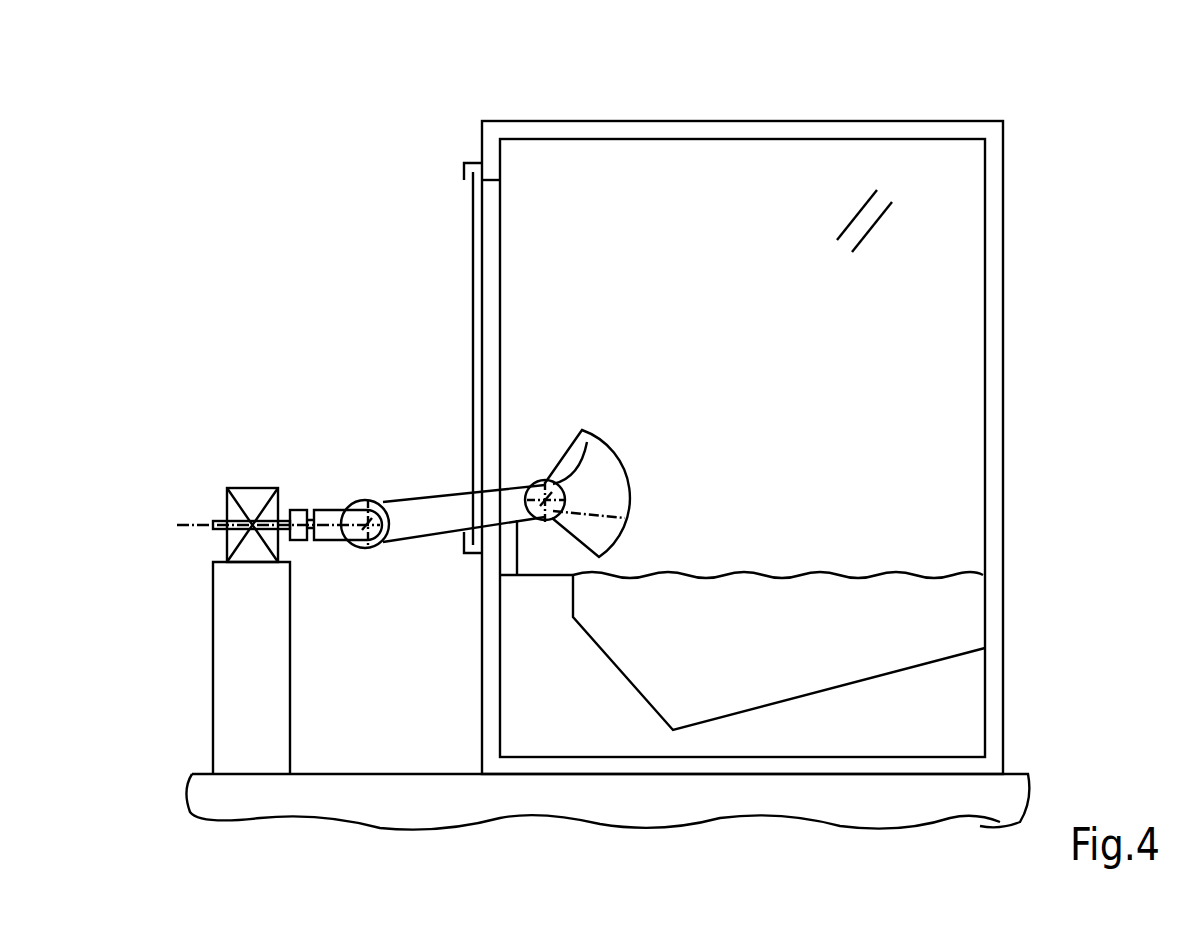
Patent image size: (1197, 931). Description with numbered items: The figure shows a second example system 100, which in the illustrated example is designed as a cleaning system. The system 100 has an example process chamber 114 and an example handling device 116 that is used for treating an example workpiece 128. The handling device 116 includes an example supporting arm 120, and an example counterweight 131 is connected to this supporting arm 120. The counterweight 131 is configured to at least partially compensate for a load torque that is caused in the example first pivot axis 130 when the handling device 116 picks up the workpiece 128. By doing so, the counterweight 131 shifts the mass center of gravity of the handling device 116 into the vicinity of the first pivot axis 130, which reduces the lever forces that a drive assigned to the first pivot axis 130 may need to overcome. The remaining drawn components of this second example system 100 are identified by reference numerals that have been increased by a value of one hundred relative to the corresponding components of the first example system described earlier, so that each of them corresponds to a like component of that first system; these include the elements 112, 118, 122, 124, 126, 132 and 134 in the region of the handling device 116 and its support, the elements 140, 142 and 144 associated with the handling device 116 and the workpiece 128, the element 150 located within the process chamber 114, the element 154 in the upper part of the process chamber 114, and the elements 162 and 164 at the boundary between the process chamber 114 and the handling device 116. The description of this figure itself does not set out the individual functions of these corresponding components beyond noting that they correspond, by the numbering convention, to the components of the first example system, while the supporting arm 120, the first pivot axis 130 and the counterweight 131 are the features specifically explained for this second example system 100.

The system 100 is at (1050, 113).
The stand 112 is at (228, 742).
The process chamber 114 is at (766, 130).
The handling device 116 is at (418, 494).
The support 118 is at (547, 565).
The supporting arm 120 is at (457, 502).
The drive unit 122 is at (330, 510).
The coupling 124 is at (300, 540).
The shaft 126 is at (220, 521).
The workpiece 128 is at (250, 488).
The first pivot axis 130 is at (625, 518).
The counterweight 131 is at (603, 483).
The joint 132 is at (370, 500).
The base 134 is at (352, 774).
The fan head 140 is at (584, 441).
The pivot joint 142 is at (380, 545).
The axis 144 is at (180, 530).
The container 150 is at (963, 625).
The window 154 is at (890, 216).
The opening 162 is at (497, 273).
The frame 164 is at (473, 222).